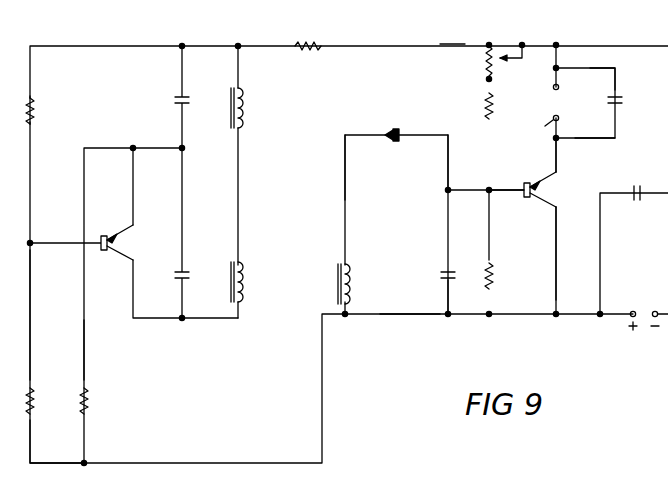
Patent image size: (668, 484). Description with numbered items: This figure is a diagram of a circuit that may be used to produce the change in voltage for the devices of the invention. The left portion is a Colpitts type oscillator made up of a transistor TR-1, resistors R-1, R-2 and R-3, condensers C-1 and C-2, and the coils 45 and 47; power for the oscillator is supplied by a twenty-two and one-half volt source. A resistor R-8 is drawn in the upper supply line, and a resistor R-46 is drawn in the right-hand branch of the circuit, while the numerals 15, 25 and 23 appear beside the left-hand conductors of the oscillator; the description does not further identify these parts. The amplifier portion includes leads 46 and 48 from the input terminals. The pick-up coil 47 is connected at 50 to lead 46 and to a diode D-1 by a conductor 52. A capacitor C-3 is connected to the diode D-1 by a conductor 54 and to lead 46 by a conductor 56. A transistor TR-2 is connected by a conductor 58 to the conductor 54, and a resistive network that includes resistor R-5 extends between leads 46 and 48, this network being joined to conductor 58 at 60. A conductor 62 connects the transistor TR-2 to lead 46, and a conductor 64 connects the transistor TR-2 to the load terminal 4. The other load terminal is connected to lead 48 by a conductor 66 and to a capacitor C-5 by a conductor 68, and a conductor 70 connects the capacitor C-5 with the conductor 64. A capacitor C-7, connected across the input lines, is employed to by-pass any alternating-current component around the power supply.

The resistor R-1 is at (44, 110).
The resistor R-2 is at (44, 401).
The resistor R-3 is at (97, 401).
The resistor R-8 is at (309, 36).
The potentiometer resistor R-46 is at (508, 82).
The resistor R-5 is at (503, 276).
The condenser C-1 is at (170, 97).
The condenser C-2 is at (169, 233).
The capacitor C-3 is at (437, 278).
The capacitor C-5 is at (602, 101).
The capacitor C-7 is at (641, 185).
The transistor TR-1 is at (127, 242).
The transistor TR-2 is at (548, 189).
The diode D-1 is at (391, 127).
The coil 45 is at (243, 93).
The pick-up coil 47 is at (351, 276).
The lead 48 is at (452, 46).
The connection point 50 is at (348, 312).
The conductor 52 is at (360, 134).
The conductor 54 is at (449, 135).
The conductor 56 is at (452, 294).
The lead 46 is at (407, 316).
The conductor 58 is at (510, 188).
The connection point 60 is at (491, 193).
The conductor 62 is at (557, 236).
The conductor 64 is at (560, 174).
The conductor 66 is at (552, 58).
The load terminal 4 is at (545, 129).
The conductor 68 is at (616, 68).
The conductor 70 is at (604, 139).
The conductor 15 is at (15, 315).
The conductor 25 is at (42, 350).
The conductor 23 is at (42, 435).